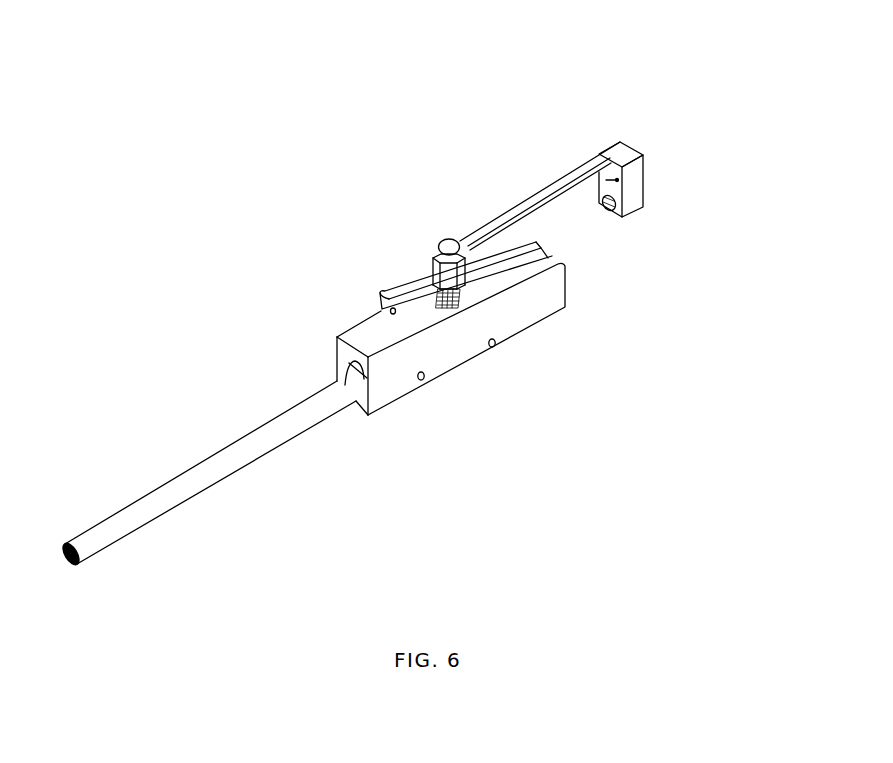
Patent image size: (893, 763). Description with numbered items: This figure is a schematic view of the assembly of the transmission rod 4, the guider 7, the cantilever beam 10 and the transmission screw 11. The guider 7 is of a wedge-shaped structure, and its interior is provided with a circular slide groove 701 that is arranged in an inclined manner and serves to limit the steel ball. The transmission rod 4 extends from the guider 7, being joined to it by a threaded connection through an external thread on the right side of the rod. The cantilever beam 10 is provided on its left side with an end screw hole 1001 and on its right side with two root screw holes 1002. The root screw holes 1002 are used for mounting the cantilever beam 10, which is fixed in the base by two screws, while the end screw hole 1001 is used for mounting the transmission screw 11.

The transmission rod 4 is at (247, 453).
The guider 7 is at (380, 380).
The circular slide groove 701 is at (334, 360).
The cantilever beam 10 is at (587, 171).
The end screw hole 1001 is at (432, 255).
The root screw holes 1002 is at (615, 213).
The transmission screw 11 is at (452, 304).